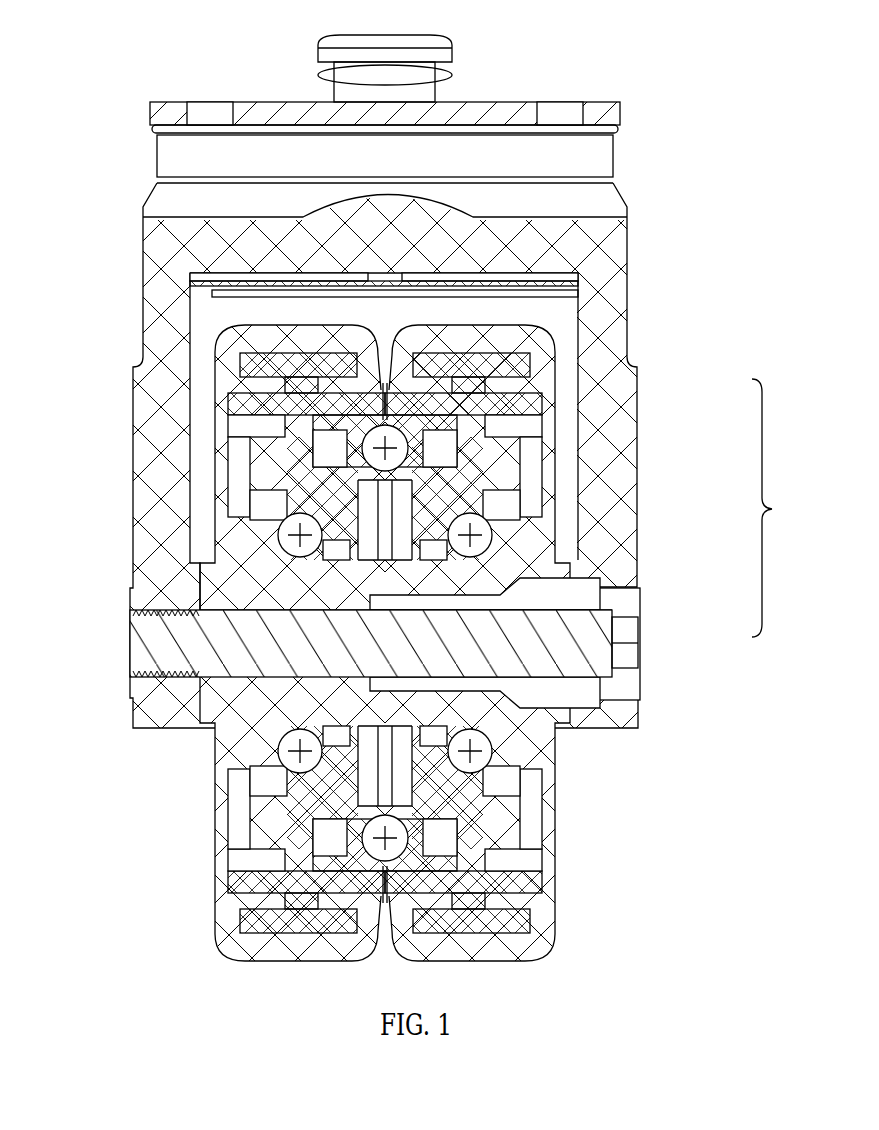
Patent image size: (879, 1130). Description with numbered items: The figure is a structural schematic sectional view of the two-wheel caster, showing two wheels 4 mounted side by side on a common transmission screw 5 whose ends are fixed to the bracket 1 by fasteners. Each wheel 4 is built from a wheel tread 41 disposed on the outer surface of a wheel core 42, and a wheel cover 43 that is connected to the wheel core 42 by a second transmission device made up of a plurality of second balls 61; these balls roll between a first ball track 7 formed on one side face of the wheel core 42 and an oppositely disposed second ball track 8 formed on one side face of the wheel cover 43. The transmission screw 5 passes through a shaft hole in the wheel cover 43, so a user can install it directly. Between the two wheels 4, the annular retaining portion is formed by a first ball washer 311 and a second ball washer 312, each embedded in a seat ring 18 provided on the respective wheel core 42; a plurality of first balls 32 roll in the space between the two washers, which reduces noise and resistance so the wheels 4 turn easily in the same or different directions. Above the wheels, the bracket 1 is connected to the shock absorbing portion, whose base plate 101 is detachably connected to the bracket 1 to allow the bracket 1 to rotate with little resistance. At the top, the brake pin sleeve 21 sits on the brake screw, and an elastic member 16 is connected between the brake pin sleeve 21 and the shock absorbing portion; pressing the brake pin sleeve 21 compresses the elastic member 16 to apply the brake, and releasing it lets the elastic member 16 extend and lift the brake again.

The bracket 1 is at (470, 247).
The base plate 101 is at (270, 103).
The brake pin sleeve 21 is at (405, 48).
The elastic member 16 is at (432, 88).
The second ball washer 312 is at (380, 418).
The first ball 32 is at (365, 432).
The first ball washer 311 is at (345, 440).
The first ball track 7 is at (285, 515).
The second ball 61 is at (280, 530).
The wheel tread 41 is at (520, 340).
The wheel core 42 is at (505, 420).
The wheel 4 is at (785, 508).
The wheel cover 43 is at (505, 567).
The transmission screw 5 is at (250, 645).
The second ball track 8 is at (253, 730).
The seat ring 18 is at (325, 812).